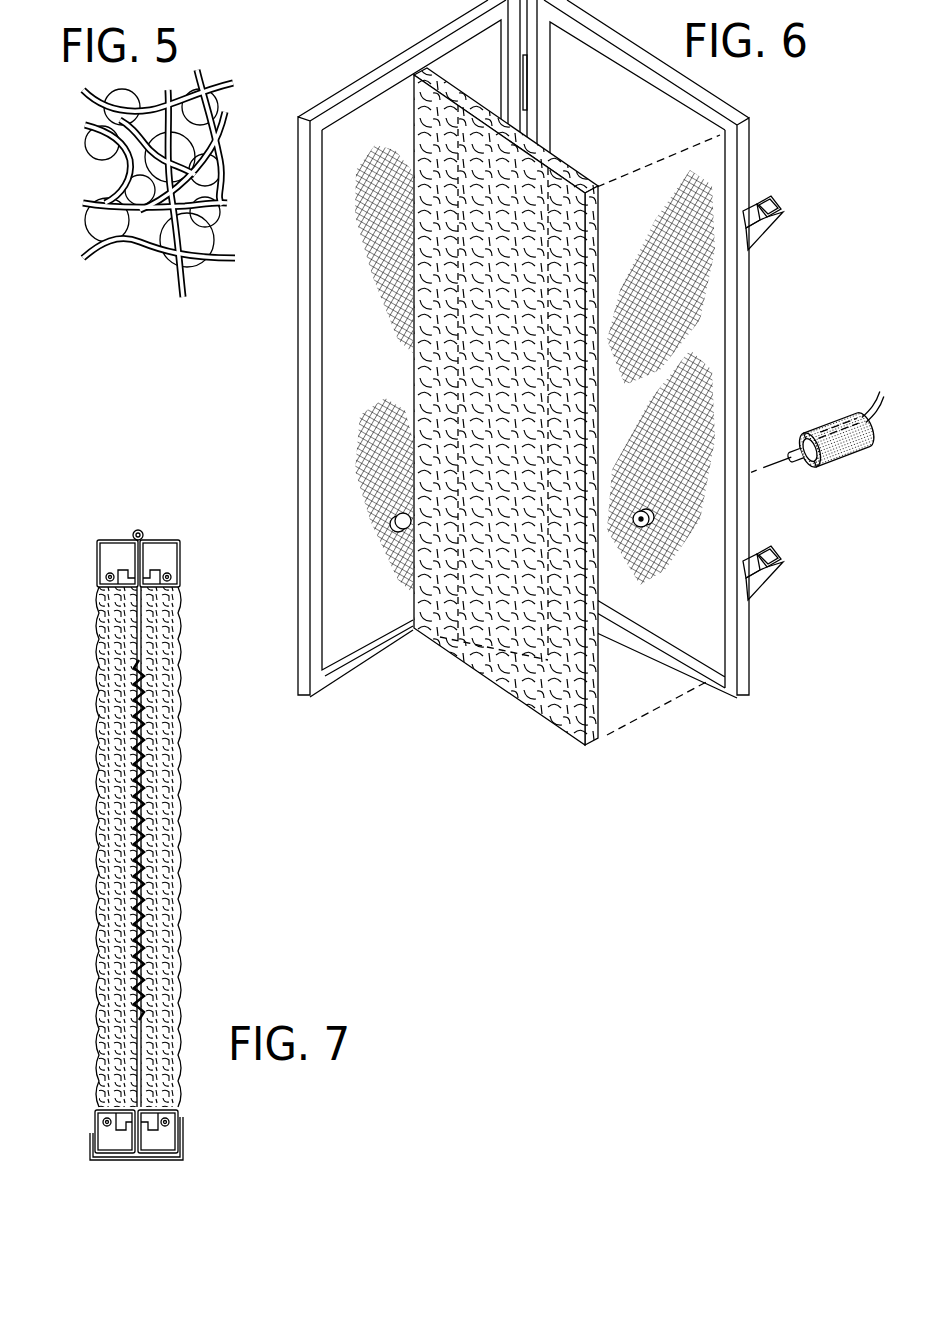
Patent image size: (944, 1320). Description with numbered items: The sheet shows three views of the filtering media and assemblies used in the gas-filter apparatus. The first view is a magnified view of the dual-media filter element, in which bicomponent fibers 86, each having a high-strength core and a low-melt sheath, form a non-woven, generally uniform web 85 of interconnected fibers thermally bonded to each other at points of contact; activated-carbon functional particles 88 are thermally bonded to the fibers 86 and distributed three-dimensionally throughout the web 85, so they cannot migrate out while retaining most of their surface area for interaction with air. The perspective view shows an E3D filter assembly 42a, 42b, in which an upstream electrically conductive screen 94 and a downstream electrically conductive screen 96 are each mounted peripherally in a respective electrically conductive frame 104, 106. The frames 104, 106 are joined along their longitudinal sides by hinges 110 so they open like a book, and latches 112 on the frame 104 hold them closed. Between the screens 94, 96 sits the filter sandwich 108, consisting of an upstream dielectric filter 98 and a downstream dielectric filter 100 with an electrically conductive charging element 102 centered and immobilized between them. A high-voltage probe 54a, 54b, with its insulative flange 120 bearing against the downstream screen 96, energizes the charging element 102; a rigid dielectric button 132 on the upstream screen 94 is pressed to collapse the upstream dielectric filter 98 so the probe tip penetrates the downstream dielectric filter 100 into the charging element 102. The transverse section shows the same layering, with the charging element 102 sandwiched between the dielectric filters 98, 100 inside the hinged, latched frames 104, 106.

In FIG. 5, the web 85 is at (166, 193).
In FIG. 5, the bicomponent fibers 86 is at (202, 97).
In FIG. 5, the functional particles 88 is at (95, 140).
In FIG. 6, the E3D filter assembly 42a is at (553, 392).
In FIG. 6, the E3D filter assembly 42b is at (553, 392).
In FIG. 6, the high-voltage probe 54a is at (819, 417).
In FIG. 6, the high-voltage probe 54b is at (835, 406).
In FIG. 6, the upstream electrically conductive screen 94 is at (345, 555).
In FIG. 7, the upstream electrically conductive screen 94 is at (103, 828).
In FIG. 6, the downstream electrically conductive screen 96 is at (683, 433).
In FIG. 7, the downstream electrically conductive screen 96 is at (163, 800).
In FIG. 6, the upstream dielectric filter 98 is at (518, 680).
In FIG. 7, the upstream dielectric filter 98 is at (143, 847).
In FIG. 6, the downstream dielectric filter 100 is at (597, 683).
In FIG. 7, the downstream dielectric filter 100 is at (165, 647).
In FIG. 6, the charging element 102 is at (440, 637).
In FIG. 7, the charging element 102 is at (150, 852).
In FIG. 6, the frame 104 is at (305, 647).
In FIG. 7, the frame 104 is at (108, 557).
In FIG. 6, the frame 106 is at (748, 312).
In FIG. 7, the frame 106 is at (165, 557).
In FIG. 6, the filter sandwich 108 is at (541, 422).
In FIG. 6, the hinges 110 is at (528, 82).
In FIG. 7, the hinges 110 is at (142, 530).
In FIG. 6, the latches 112 is at (782, 213).
In FIG. 7, the latches 112 is at (157, 1160).
In FIG. 6, the flange 120 is at (648, 535).
In FIG. 6, the button 132 is at (398, 535).